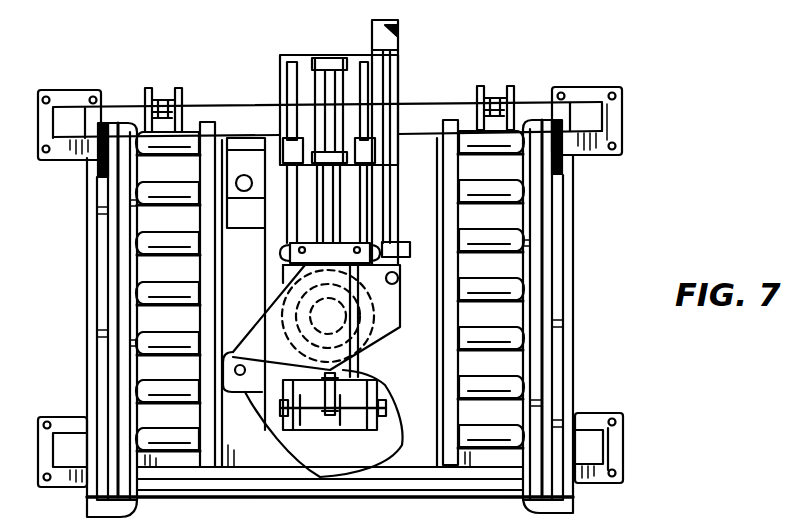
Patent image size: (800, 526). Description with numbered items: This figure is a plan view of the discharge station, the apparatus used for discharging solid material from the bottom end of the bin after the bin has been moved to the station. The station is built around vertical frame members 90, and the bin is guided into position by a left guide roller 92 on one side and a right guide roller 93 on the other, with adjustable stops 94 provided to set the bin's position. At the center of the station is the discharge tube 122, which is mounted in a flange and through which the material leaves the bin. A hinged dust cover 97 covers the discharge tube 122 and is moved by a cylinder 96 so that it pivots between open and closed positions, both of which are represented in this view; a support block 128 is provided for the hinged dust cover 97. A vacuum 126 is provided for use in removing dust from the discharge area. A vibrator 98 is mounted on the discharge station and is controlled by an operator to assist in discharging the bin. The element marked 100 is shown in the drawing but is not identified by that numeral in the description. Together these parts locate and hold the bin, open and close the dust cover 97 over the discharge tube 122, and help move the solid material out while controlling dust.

The vertical frame members 90 is at (423, 110).
The left guide roller 92 is at (120, 280).
The right guide roller 93 is at (537, 268).
The adjustable stops 94 is at (167, 106).
The cylinder 96 is at (395, 44).
The dust cover 97 is at (393, 288).
The vibrator 98 is at (243, 167).
The actuating cylinder assembly 100 is at (315, 97).
The discharge tube 122 is at (278, 293).
The vacuum 126 is at (298, 417).
The support block 128 is at (336, 392).